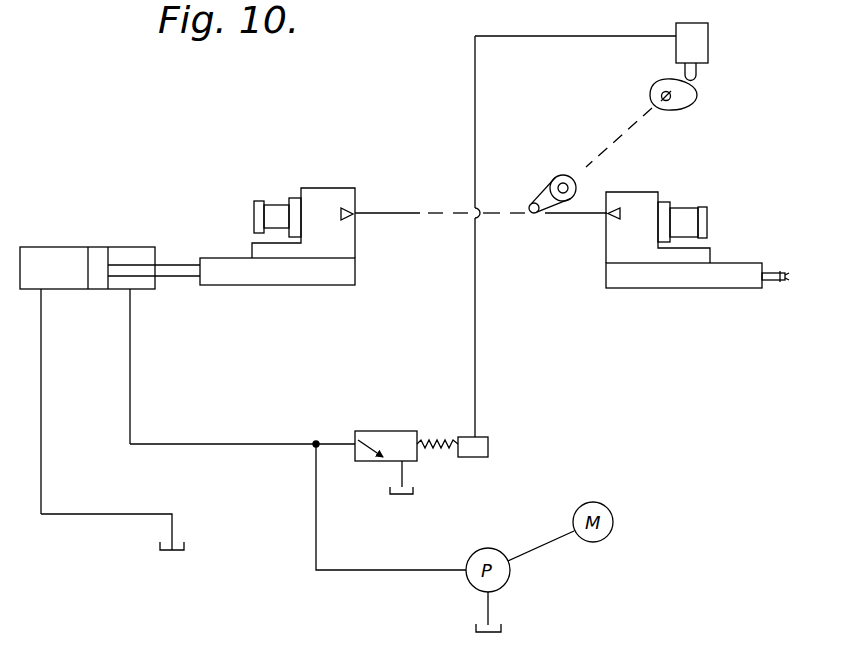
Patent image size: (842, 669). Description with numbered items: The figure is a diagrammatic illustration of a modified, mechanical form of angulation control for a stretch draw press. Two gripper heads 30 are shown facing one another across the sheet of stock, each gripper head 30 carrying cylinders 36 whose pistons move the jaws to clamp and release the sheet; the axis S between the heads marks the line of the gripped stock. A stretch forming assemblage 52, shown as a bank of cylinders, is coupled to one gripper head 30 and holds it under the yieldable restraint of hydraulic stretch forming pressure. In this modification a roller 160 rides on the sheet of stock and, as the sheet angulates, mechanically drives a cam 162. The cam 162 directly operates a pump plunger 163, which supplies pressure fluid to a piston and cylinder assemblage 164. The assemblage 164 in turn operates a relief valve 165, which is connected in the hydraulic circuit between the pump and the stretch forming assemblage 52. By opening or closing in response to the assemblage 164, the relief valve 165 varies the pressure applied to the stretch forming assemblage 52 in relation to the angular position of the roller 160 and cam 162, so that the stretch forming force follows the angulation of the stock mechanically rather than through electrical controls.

The stretch forming assemblage 52 is at (47, 245).
The gripper head 30 is at (332, 187).
The cylinder 36 is at (252, 205).
The spindle axis S is at (469, 212).
The roller 160 is at (541, 214).
The cam 162 is at (698, 99).
The pump plunger 163 is at (708, 32).
The piston and cylinder assemblage 164 is at (488, 447).
The relief valve 165 is at (385, 431).